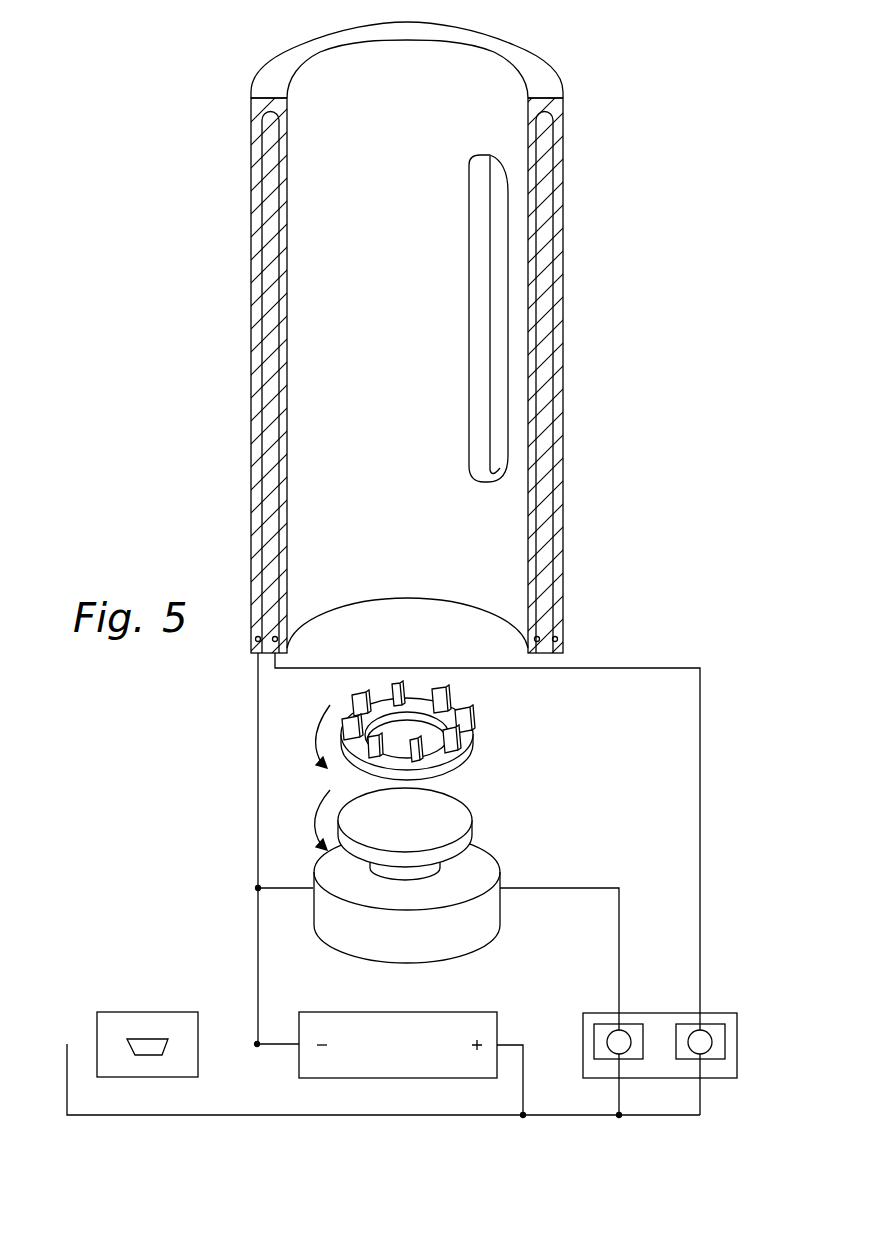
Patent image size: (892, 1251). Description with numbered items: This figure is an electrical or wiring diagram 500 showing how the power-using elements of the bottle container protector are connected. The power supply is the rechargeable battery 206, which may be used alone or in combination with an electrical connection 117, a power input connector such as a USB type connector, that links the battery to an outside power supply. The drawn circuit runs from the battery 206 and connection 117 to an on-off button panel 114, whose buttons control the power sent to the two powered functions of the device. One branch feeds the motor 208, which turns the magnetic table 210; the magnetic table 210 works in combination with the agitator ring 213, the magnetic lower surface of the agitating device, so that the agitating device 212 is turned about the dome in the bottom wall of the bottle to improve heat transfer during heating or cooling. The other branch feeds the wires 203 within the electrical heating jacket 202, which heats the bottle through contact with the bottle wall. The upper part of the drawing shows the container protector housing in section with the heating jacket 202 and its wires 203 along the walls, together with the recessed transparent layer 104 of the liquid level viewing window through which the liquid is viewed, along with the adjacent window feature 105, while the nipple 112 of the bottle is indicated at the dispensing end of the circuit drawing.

The electrical diagram 500 is at (135, 123).
The wires 203 is at (258, 231).
The electrical heating jacket 202 is at (254, 343).
The recessed transparent layer 104 is at (495, 332).
The slot wall 105 is at (478, 238).
The agitating device 212 is at (472, 713).
The agitator ring 213 is at (458, 760).
The magnetic table 210 is at (465, 818).
The motor 208 is at (475, 935).
The electrical connection 117 is at (148, 1048).
The rechargeable battery 206 is at (390, 1012).
The on-off button panel 114 is at (613, 1040).
The nipple 112 is at (705, 1040).